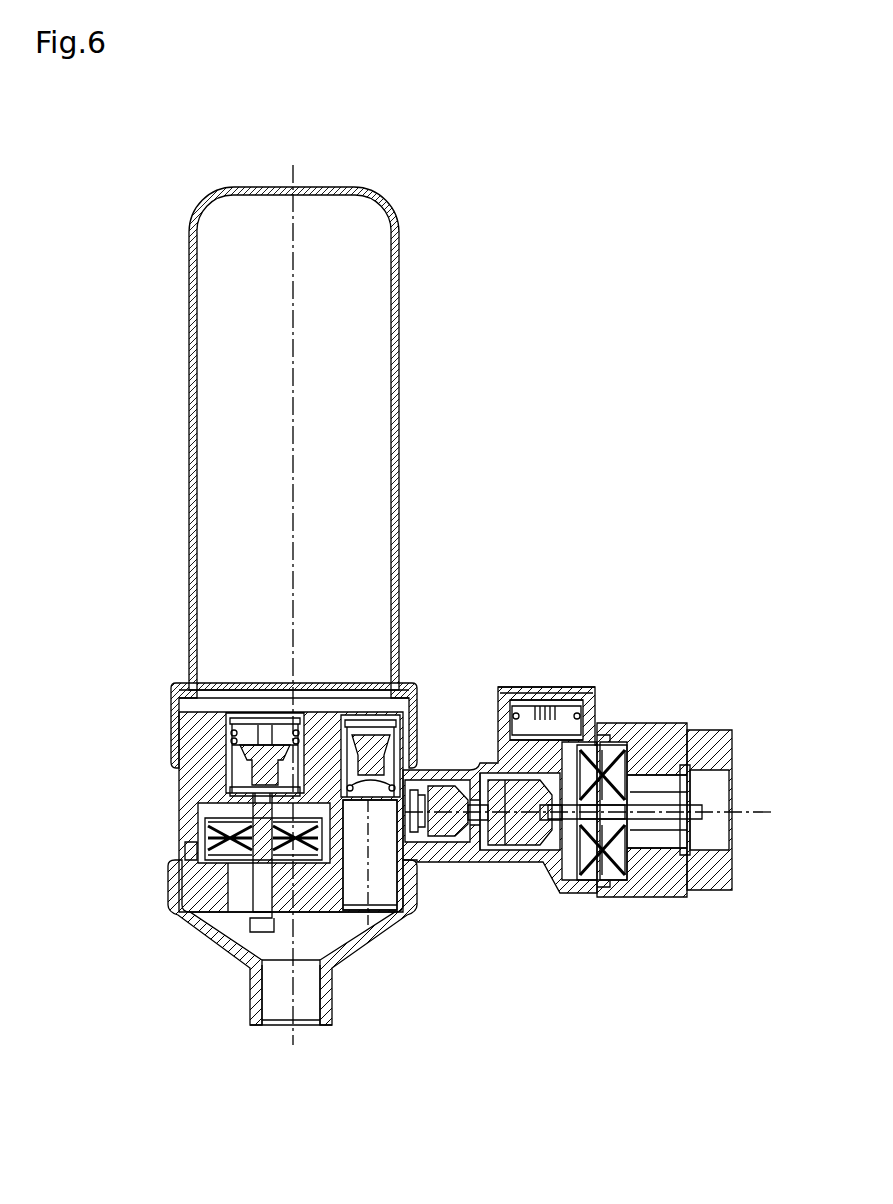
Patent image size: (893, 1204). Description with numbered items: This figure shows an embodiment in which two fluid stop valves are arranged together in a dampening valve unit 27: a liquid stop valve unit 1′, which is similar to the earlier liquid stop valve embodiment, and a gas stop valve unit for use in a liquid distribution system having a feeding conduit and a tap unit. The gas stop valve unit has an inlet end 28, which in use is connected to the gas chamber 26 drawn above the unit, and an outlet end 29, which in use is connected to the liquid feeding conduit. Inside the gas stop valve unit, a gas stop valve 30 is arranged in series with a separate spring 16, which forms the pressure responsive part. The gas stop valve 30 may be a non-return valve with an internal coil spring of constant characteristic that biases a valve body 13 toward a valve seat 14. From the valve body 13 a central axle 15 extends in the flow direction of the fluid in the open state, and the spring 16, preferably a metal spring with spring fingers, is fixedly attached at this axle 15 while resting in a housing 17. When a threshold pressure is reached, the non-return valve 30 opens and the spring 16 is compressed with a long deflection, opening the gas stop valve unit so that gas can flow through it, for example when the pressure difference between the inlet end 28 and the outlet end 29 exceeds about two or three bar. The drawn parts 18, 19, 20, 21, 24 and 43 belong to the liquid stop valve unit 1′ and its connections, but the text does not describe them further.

The liquid stop valve unit 1′ is at (522, 877).
The valve body 13 is at (228, 742).
The valve seat 14 is at (228, 732).
The central axle 15 is at (323, 977).
The spring 16 is at (307, 877).
The housing 17 is at (207, 868).
The valve element 18 is at (433, 817).
The spring 19 is at (630, 878).
The cap 20 is at (567, 688).
The union nut 21 is at (618, 727).
The end nut 24 is at (720, 883).
The gas chamber 26 is at (362, 465).
The dampening valve unit 27 is at (538, 557).
The inlet end 28 is at (300, 730).
The outlet end 29 is at (237, 913).
The gas stop valve 30 is at (308, 725).
The secondary valve 43 is at (370, 753).